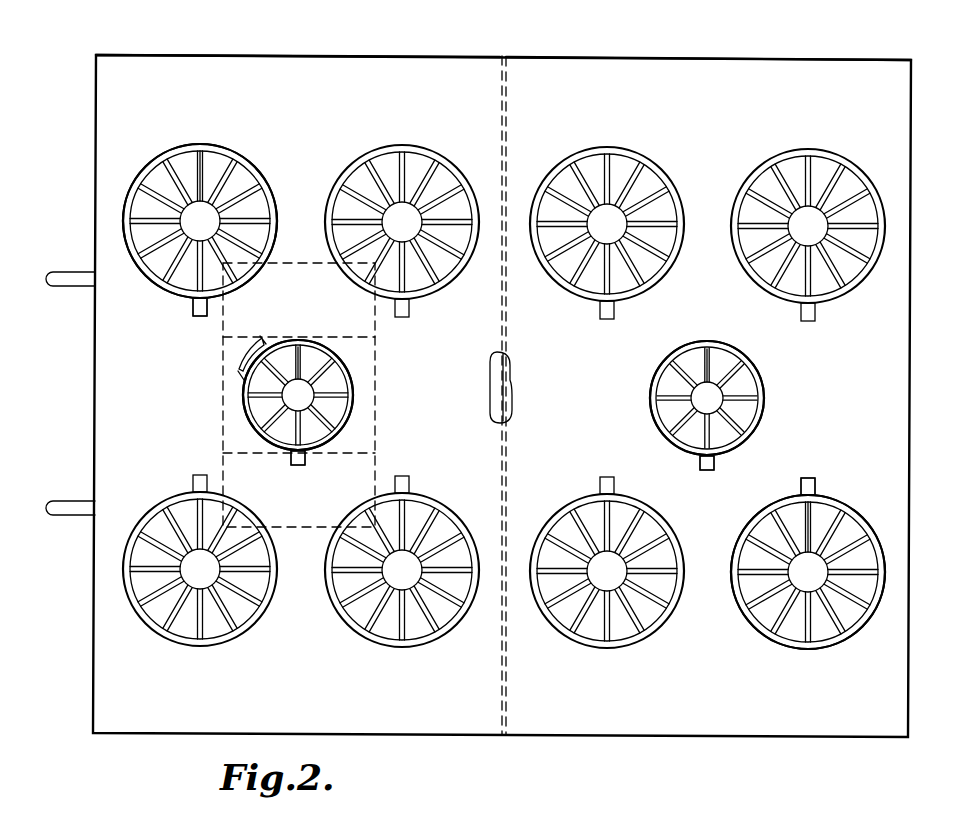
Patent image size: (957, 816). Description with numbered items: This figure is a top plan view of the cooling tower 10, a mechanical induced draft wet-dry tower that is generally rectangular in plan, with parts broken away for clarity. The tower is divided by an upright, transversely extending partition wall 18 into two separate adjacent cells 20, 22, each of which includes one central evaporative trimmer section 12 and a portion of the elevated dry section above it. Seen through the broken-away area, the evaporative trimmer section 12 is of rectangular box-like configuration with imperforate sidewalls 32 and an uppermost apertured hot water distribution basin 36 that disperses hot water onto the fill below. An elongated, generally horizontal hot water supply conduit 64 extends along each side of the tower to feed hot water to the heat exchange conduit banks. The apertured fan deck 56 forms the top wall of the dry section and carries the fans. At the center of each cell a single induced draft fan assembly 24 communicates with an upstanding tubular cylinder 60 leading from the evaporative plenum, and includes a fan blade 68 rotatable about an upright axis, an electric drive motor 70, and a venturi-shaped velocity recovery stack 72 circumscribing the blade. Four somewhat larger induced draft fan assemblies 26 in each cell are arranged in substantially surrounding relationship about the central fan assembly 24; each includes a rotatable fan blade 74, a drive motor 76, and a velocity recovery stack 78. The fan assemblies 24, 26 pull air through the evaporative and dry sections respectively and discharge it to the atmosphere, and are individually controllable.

The cooling tower 10 is at (84, 97).
The evaporative trimmer section 12 is at (290, 399).
The partition wall 18 is at (508, 404).
The cell 20 is at (412, 54).
The cell 22 is at (780, 54).
The fan assembly 24 is at (365, 364).
The fan assembly 26 is at (334, 156).
The sidewall 32 is at (220, 330).
The hot water distribution basin 36 is at (298, 262).
The fan deck 56 is at (553, 714).
The tubular cylinder 60 is at (240, 371).
The hot water supply conduit 64 is at (60, 288).
The fan blade 68 is at (330, 366).
The electric drive motor 70 is at (300, 467).
The velocity recovery stack 72 is at (351, 392).
The fan blade 74 is at (160, 190).
The drive motor 76 is at (193, 312).
The velocity recovery stack 78 is at (200, 144).